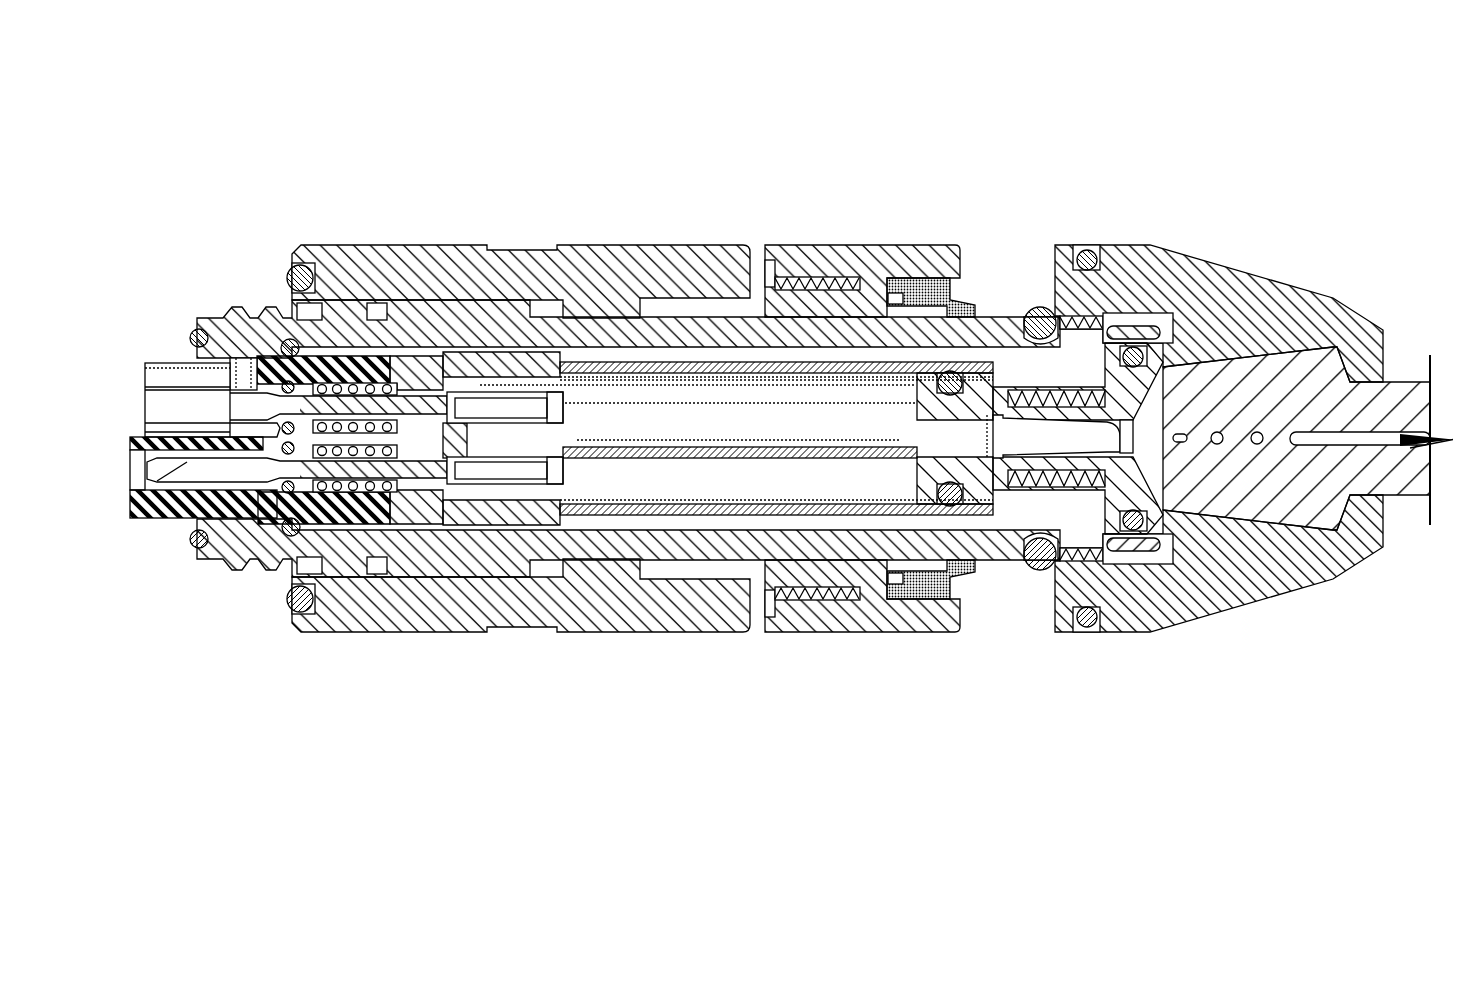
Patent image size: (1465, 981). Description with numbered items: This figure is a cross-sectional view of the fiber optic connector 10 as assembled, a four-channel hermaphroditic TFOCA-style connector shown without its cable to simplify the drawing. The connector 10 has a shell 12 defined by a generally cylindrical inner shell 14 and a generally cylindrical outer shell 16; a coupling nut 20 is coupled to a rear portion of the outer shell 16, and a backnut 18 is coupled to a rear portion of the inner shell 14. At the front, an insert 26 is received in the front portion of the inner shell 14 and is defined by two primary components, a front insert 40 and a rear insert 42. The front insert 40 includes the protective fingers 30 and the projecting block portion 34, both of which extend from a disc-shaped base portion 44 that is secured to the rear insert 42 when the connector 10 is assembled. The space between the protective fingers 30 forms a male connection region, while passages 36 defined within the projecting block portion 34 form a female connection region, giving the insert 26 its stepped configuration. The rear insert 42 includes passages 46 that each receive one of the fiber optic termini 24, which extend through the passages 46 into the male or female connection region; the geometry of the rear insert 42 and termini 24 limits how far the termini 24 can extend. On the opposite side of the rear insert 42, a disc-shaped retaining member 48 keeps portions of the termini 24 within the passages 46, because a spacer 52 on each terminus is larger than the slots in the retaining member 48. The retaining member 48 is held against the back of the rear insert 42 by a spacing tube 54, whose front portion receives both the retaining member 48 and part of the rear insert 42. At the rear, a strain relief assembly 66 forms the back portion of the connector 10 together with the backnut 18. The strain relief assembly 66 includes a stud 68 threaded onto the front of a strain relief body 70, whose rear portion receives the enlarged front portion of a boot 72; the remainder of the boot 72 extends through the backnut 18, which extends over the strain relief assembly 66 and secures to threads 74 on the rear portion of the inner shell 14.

The fiber optic connector 10 is at (671, 156).
The shell 12 is at (259, 299).
The inner shell 14 is at (208, 308).
The outer shell 16 is at (410, 245).
The backnut 18 is at (1227, 262).
The coupling nut 20 is at (877, 243).
The fiber optic termini 24 is at (178, 398).
The insert 26 is at (265, 530).
The protective fingers 30 is at (145, 395).
The projecting block portion 34 is at (150, 520).
The passages 36 is at (147, 465).
The front insert 40 is at (167, 518).
The rear insert 42 is at (340, 526).
The base portion 44 is at (257, 373).
The passages 46 is at (383, 508).
The retaining member 48 is at (462, 494).
The spacer 52 is at (413, 370).
The spacing tube 54 is at (678, 523).
The strain relief assembly 66 is at (1018, 513).
The stud 68 is at (917, 397).
The strain relief body 70 is at (1203, 540).
The boot 72 is at (1395, 480).
The threads 74 is at (1023, 318).